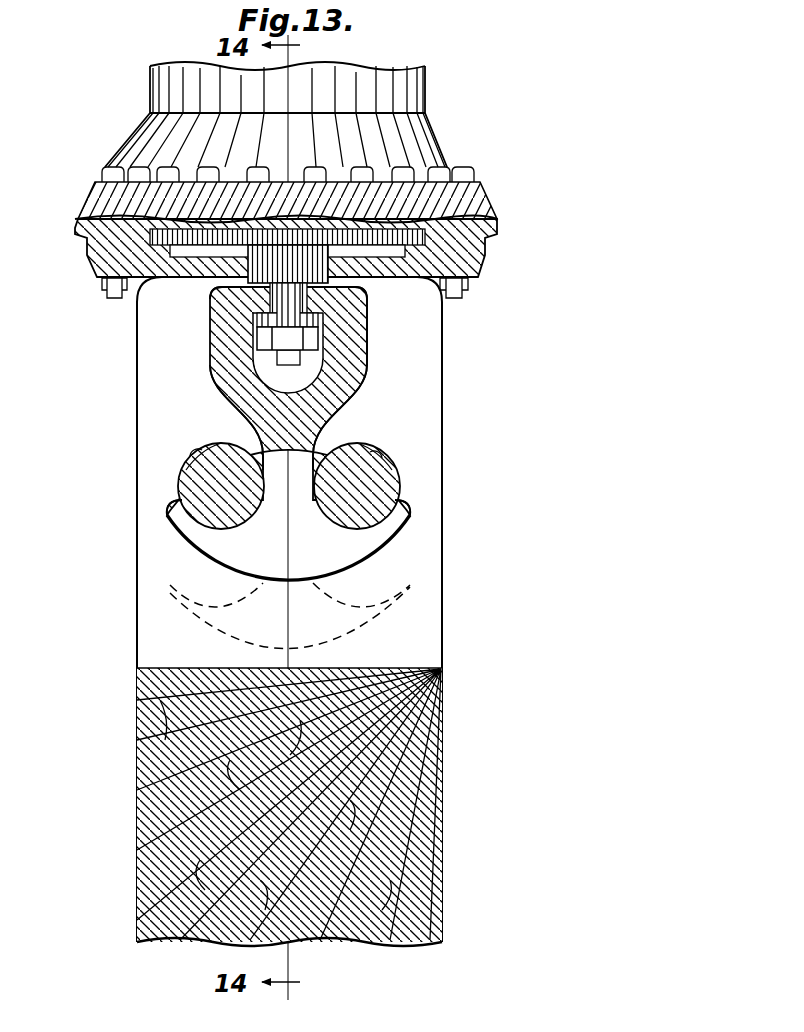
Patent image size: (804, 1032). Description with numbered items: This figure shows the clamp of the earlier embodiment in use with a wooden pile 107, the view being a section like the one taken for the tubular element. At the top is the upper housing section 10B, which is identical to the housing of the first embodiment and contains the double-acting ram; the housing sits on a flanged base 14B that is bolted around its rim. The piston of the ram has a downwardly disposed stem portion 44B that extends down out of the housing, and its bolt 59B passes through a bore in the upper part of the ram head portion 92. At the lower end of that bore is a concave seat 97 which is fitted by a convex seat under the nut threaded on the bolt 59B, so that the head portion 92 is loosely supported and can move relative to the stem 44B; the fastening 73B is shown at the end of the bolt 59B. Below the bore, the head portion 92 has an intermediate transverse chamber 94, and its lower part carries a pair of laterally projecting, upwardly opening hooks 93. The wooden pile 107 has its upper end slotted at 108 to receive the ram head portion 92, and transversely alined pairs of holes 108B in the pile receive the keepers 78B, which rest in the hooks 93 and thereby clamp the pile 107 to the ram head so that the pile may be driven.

The upper housing section 10B is at (412, 84).
The base plate with fastening bolts 14B is at (480, 197).
The stem portion 44B is at (262, 262).
The bolt 59B is at (266, 320).
The bolt 73B is at (277, 352).
The ram head portion 92 is at (222, 406).
The concave seat 97 is at (320, 340).
The intermediate transverse chamber 94 is at (305, 372).
The holes 108B is at (185, 471).
The keepers 78B is at (183, 498).
The hooks 93 is at (175, 527).
The slot 108 is at (155, 625).
The wooden pile 107 is at (442, 770).